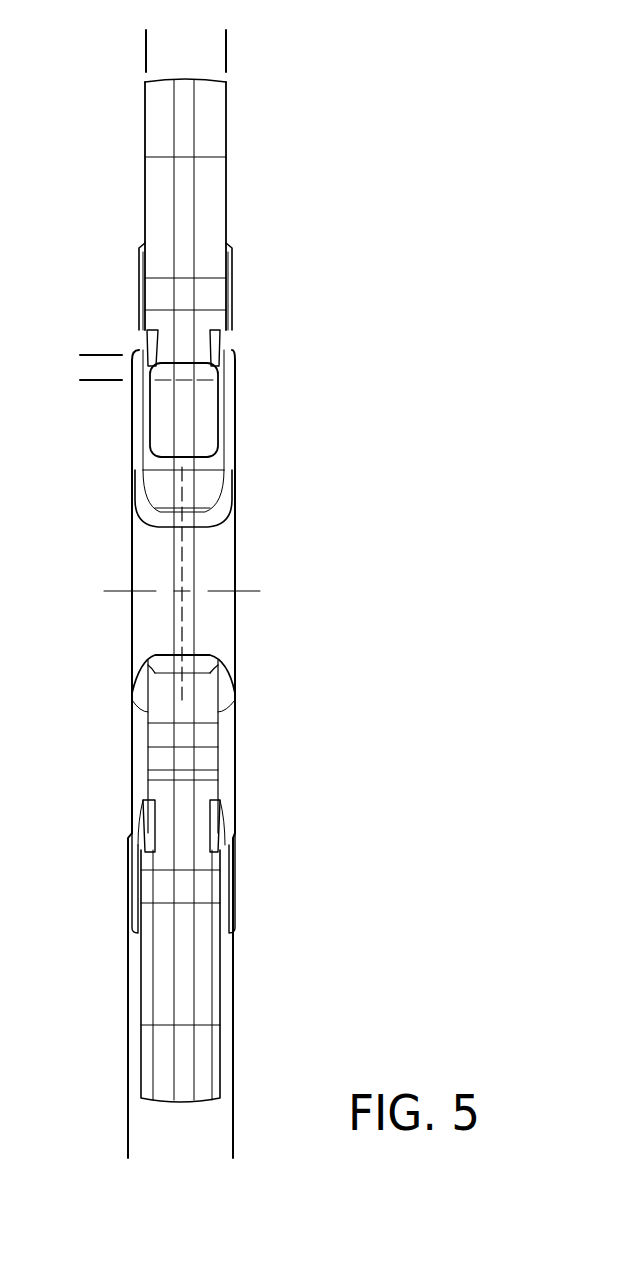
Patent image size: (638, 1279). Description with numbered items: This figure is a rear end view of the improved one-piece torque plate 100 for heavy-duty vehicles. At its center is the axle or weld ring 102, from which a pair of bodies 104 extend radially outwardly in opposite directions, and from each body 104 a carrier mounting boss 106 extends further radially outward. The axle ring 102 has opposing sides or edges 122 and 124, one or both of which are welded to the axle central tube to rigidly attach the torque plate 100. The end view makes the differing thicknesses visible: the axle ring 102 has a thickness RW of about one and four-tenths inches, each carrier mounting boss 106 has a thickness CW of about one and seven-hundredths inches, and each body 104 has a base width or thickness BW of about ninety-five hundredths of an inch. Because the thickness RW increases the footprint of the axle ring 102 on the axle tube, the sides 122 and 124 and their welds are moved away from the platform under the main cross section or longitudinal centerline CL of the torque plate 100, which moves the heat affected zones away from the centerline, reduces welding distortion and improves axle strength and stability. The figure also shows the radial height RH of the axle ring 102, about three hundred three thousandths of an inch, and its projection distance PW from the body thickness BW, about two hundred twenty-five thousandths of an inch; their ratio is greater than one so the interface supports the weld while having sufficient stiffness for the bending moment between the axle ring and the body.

The torque plate 100 is at (346, 141).
The axle ring 102 is at (236, 566).
The body 104 is at (218, 433).
The carrier mounting boss 106 is at (157, 182).
The axle ring side 122 is at (236, 640).
The axle ring side 124 is at (131, 633).
The carrier mounting boss thickness CW is at (224, 55).
The radial height of axle ring RH is at (107, 303).
The projection distance PW is at (127, 442).
The body thickness BW is at (153, 442).
The longitudinal centerline CL is at (190, 562).
The axle ring thickness RW is at (231, 1145).